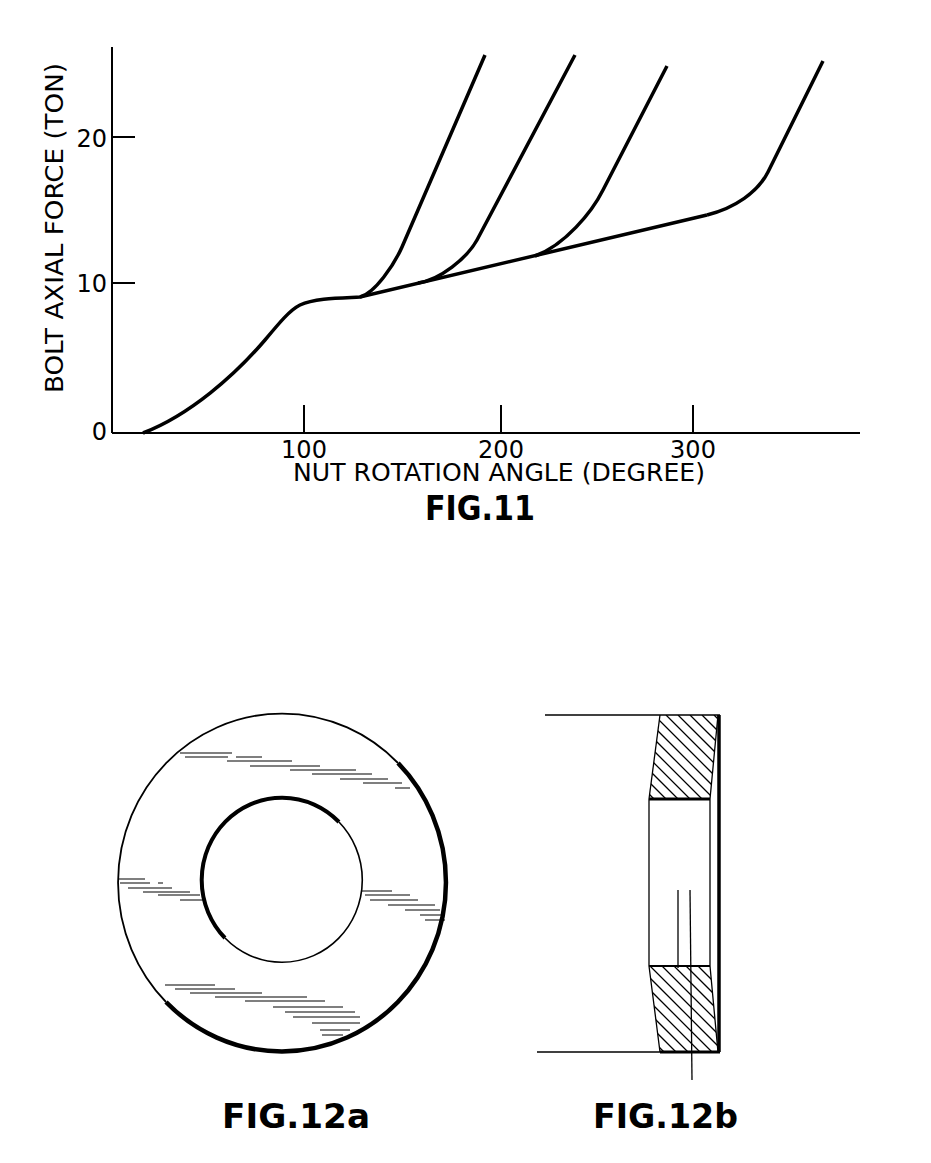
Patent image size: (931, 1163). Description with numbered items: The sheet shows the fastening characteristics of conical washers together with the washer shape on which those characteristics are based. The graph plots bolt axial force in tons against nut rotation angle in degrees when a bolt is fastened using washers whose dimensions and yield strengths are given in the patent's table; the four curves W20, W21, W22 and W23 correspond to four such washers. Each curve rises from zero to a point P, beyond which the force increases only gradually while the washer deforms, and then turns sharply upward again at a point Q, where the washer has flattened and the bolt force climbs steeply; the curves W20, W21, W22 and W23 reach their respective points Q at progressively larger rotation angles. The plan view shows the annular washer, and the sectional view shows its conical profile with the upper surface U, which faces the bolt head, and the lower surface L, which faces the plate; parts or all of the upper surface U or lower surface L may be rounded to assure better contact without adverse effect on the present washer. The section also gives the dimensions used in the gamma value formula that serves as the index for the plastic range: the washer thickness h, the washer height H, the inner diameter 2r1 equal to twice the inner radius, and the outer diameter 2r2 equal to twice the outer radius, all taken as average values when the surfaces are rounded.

In FIG. 11, the bolt axial force curve for washer W20 is at (469, 89).
In FIG. 11, the bolt axial force curve for washer W21 is at (558, 92).
In FIG. 11, the bolt axial force curve for washer W22 is at (655, 92).
In FIG. 11, the bolt axial force curve for washer W23 is at (803, 99).
In FIG. 11, the first transition point of curve P is at (293, 318).
In FIG. 11, the second transition point where washer flattens Q is at (368, 300).
In FIG. 12b, the upper surface U is at (650, 782).
In FIG. 12b, the lower surface L is at (715, 781).
In FIG. 12b, the washer thickness h is at (714, 753).
In FIG. 12b, the washer height H is at (704, 907).
In FIG. 12b, the washer inner diameter 2r1 is at (553, 1052).
In FIG. 12b, the washer outer diameter 2r2 is at (649, 799).